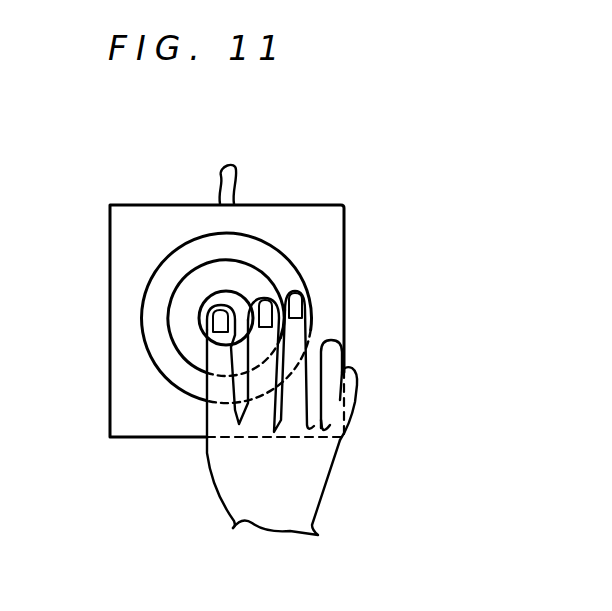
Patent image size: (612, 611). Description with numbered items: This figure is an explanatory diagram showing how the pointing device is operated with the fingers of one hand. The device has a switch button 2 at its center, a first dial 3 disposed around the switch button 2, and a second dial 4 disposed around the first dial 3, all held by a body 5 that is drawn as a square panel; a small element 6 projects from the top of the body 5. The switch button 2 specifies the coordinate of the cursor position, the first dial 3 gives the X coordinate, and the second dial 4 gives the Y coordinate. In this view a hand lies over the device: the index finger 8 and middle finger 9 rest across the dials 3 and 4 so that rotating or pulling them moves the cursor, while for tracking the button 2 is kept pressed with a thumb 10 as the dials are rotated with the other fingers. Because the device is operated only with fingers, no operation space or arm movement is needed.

The switch button 2 is at (213, 292).
The first dial 3 is at (175, 308).
The second dial 4 is at (154, 343).
The body 5 is at (121, 399).
The connecting cable 6 is at (237, 185).
The index finger 8 is at (273, 291).
The middle finger 9 is at (300, 327).
The thumb 10 is at (217, 393).